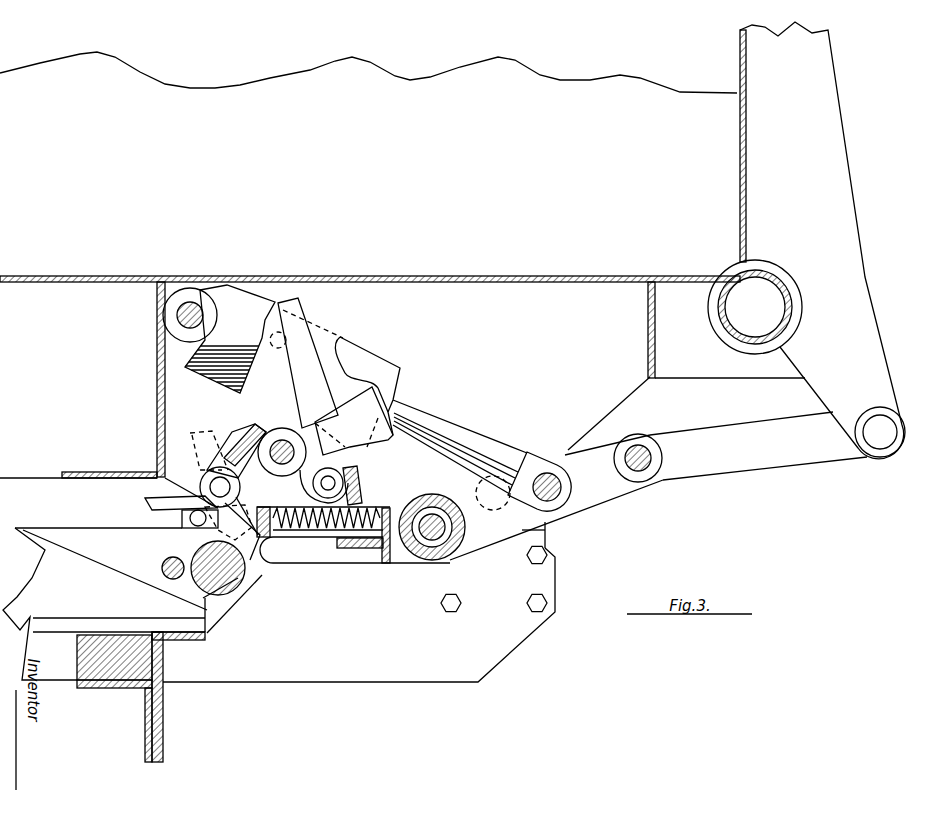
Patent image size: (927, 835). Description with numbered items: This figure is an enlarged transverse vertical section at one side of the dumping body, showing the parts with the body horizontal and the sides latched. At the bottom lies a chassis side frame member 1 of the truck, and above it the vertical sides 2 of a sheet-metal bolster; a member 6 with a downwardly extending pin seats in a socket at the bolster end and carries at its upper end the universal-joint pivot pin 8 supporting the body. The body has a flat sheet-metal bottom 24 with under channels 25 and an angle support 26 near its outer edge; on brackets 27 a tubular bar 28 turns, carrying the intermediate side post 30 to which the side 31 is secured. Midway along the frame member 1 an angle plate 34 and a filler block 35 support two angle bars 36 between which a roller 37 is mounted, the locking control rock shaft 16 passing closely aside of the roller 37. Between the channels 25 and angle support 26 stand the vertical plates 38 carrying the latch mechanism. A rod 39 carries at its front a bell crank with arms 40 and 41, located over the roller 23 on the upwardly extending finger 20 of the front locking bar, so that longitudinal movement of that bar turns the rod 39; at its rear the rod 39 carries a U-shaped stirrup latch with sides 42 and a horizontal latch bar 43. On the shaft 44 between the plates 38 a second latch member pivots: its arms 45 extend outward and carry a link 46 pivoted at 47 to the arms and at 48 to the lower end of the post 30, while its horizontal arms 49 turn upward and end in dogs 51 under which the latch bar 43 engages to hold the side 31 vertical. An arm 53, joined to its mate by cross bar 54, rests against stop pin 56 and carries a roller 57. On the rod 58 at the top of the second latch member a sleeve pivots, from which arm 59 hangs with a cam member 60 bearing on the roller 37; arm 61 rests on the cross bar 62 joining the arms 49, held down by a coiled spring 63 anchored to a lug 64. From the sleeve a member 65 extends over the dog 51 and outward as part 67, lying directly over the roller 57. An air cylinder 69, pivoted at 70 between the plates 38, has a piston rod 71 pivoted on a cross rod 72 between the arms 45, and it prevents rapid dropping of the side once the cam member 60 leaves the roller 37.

The chassis side frame member 1 is at (147, 705).
The bolster side 2 is at (336, 675).
The socket-received member 6 is at (548, 531).
The pivot pin 8 is at (493, 512).
The rock shaft 16 is at (170, 578).
The finger 20 is at (182, 518).
The roller 23 is at (213, 533).
The bottom 24 is at (225, 277).
The channel 25 is at (158, 356).
The angle support 26 is at (632, 280).
The bracket 27 is at (697, 368).
The tubular bar 28 is at (776, 268).
The intermediate side post 30 is at (835, 165).
The side 31 is at (745, 132).
The angle plate 34 is at (165, 672).
The filler block 35 is at (105, 668).
The angle bar 36 is at (72, 600).
The roller 37 is at (228, 595).
The vertical plate 38 is at (607, 403).
The rod 39 is at (206, 478).
The bell crank arm 40 is at (175, 560).
The bell crank arm 41 is at (198, 510).
The stirrup side 42 is at (200, 455).
The latch bar 43 is at (233, 437).
The pivot rod 44 is at (433, 535).
The arm 45 is at (604, 494).
The link 46 is at (738, 465).
The pivot 47 is at (645, 465).
The pivotal connection 48 is at (882, 457).
The horizontal arm 49 is at (302, 557).
The dog 51 is at (261, 424).
The arm 53 is at (313, 353).
The cross bar 54 is at (357, 490).
The stop pin 56 is at (287, 344).
The roller 57 is at (356, 477).
The rod 58 is at (288, 446).
The arm 59 is at (280, 492).
The cam member 60 is at (260, 535).
The arm 61 is at (317, 530).
The cross bar 62 is at (363, 550).
The coiled spring 63 is at (332, 548).
The lug 64 is at (275, 512).
The member 65 is at (310, 440).
The part 67 is at (345, 398).
The air cylinder 69 is at (262, 303).
The pivotal mounting 70 is at (190, 300).
The piston rod 71 is at (438, 418).
The cross rod 72 is at (548, 478).